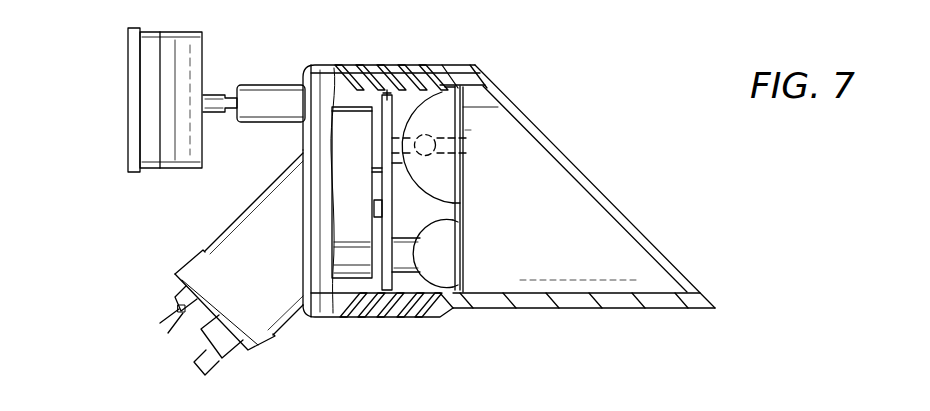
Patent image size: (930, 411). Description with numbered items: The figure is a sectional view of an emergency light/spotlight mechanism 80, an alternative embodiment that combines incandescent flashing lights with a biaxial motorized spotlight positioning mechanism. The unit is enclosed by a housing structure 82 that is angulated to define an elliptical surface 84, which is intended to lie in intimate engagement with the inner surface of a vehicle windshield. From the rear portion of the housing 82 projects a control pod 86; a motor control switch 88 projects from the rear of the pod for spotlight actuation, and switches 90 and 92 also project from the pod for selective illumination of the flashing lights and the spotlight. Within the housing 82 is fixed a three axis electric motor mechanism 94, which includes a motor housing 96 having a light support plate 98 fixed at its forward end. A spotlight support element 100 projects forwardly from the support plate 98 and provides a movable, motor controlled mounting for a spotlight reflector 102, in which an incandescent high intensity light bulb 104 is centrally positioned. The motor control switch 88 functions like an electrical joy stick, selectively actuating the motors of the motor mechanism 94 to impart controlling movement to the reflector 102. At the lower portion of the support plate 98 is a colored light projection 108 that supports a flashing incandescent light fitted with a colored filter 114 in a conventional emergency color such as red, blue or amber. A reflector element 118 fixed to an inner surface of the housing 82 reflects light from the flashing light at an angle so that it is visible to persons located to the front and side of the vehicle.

The emergency light/spotlight mechanism 80 is at (589, 100).
The housing structure 82 is at (605, 309).
The elliptical surface 84 is at (590, 178).
The control pod 86 is at (218, 233).
The motor control switch 88 is at (238, 358).
The switch 90 is at (181, 330).
The switch 92 is at (163, 320).
The three axis electric motor mechanism 94 is at (343, 104).
The motor housing 96 is at (343, 156).
The light support plate 98 is at (388, 92).
The spotlight support element 100 is at (397, 128).
The spotlight reflector 102 is at (447, 100).
The incandescent high intensity light bulb 104 is at (466, 153).
The colored light projection 108 is at (400, 258).
The colored filters 114 is at (458, 257).
The reflector element 118 is at (593, 228).